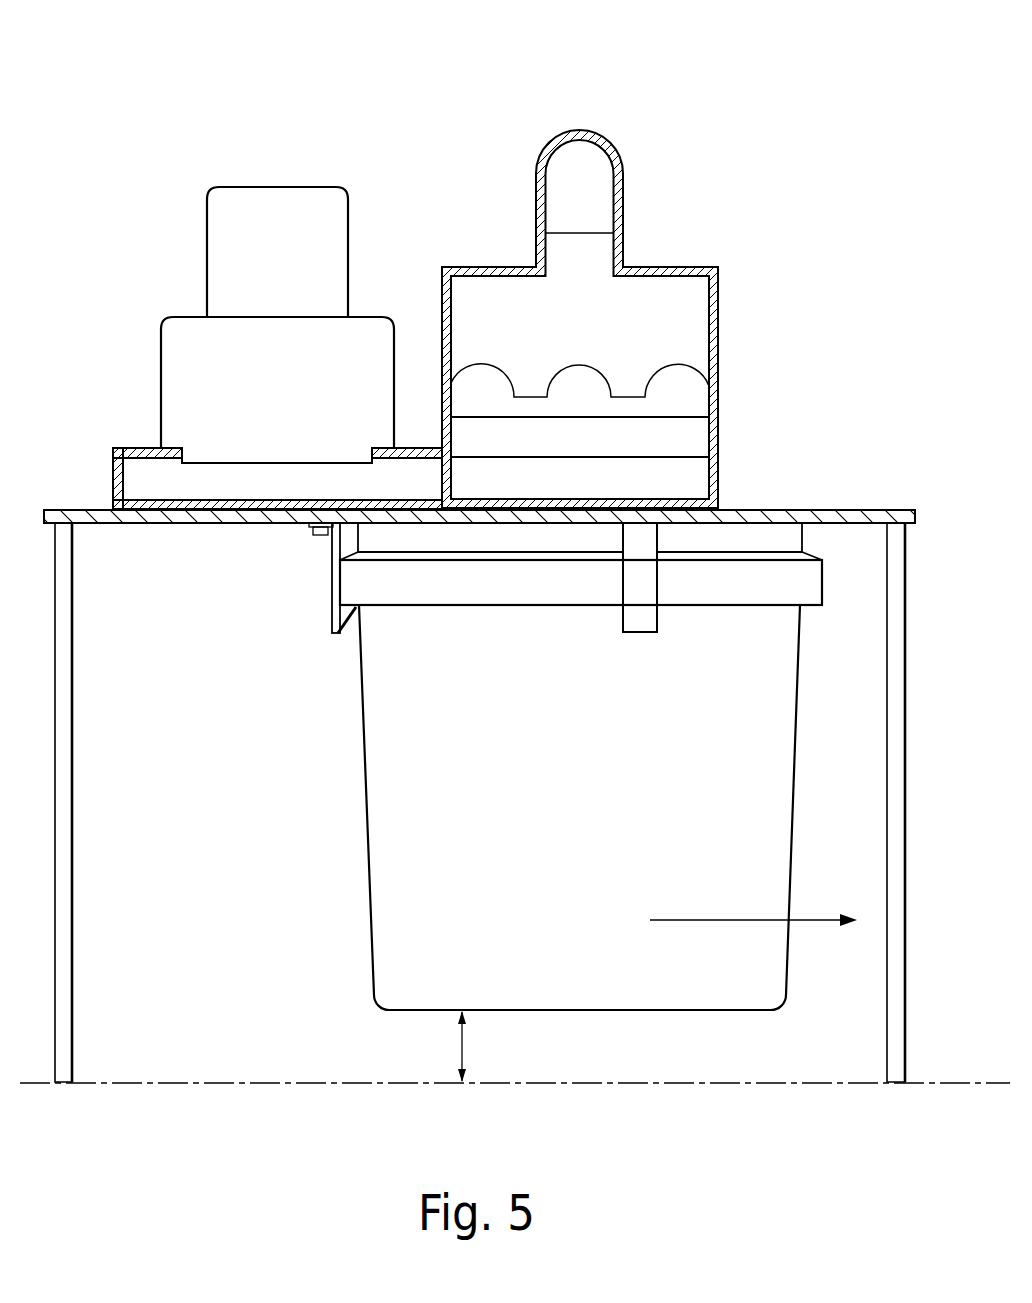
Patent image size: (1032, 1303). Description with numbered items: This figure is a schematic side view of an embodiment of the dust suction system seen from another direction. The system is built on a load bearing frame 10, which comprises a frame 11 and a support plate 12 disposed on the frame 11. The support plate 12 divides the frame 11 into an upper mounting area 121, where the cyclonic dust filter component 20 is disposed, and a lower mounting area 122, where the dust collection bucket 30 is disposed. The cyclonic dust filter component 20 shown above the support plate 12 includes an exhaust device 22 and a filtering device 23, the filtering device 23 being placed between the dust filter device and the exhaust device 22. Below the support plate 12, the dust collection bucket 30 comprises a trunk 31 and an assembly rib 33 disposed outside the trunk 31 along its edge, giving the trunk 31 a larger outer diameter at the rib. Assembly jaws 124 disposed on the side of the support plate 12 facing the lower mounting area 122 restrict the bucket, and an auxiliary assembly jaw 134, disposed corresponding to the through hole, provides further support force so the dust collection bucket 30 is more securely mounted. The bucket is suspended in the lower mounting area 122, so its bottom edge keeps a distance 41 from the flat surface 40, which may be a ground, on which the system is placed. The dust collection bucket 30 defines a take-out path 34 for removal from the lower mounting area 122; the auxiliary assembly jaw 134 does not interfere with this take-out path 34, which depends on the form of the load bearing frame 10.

The load bearing frame 10 is at (479, 689).
The frame 11 is at (73, 897).
The support plate 12 is at (820, 510).
The upper mounting area 121 is at (133, 400).
The lower mounting area 122 is at (193, 614).
The assembly jaw 124 is at (638, 620).
The auxiliary assembly jaw 134 is at (333, 613).
The cyclonic dust filter component 20 is at (496, 274).
The exhaust device 22 is at (290, 190).
The filtering device 23 is at (719, 289).
The dust collection bucket 30 is at (564, 793).
The trunk 31 is at (385, 783).
The assembly rib 33 is at (815, 605).
The take-out path 34 is at (752, 922).
The flat surface 40 is at (680, 1085).
The distance 41 is at (462, 1047).